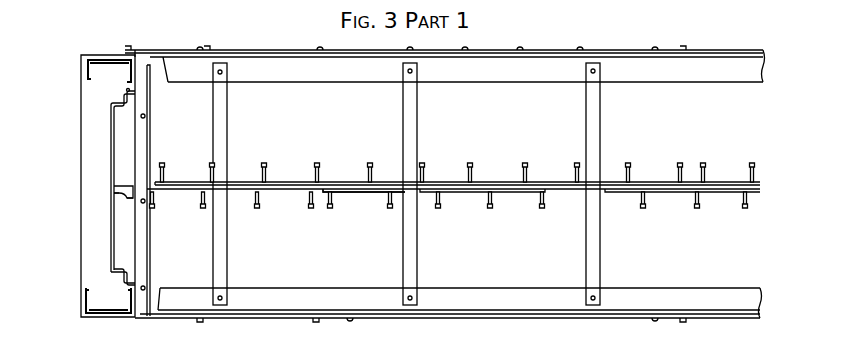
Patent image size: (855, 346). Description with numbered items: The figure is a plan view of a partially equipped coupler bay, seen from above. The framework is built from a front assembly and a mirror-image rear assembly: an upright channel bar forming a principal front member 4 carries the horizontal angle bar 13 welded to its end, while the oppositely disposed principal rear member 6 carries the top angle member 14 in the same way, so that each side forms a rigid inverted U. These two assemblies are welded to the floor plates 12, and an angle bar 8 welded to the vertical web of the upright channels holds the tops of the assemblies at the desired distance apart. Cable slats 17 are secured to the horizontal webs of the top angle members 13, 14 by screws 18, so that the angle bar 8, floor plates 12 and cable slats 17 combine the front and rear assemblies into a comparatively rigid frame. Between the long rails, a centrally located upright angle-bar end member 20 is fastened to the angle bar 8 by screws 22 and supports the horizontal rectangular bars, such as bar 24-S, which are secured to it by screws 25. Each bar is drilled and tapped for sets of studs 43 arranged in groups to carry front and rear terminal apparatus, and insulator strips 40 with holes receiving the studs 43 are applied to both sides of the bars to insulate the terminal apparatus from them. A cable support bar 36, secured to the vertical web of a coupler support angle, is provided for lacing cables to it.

The principal front member 4 is at (81, 294).
The principal rear member 6 is at (81, 64).
The angle bar 8 is at (150, 130).
The floor plate 12 is at (84, 262).
The horizontal angle bar 13 is at (735, 296).
The top angle member 14 is at (735, 73).
The cable slat 17 is at (588, 133).
The screw 18 is at (222, 74).
The upright angle-bar end member 20 is at (133, 206).
The screw 22 is at (130, 199).
The horizontal rectangular bar 24-S is at (297, 192).
The screw 25 is at (132, 186).
The cable support bar 36 is at (111, 121).
The insulator strip 40 is at (349, 182).
The stud 43 is at (525, 166).